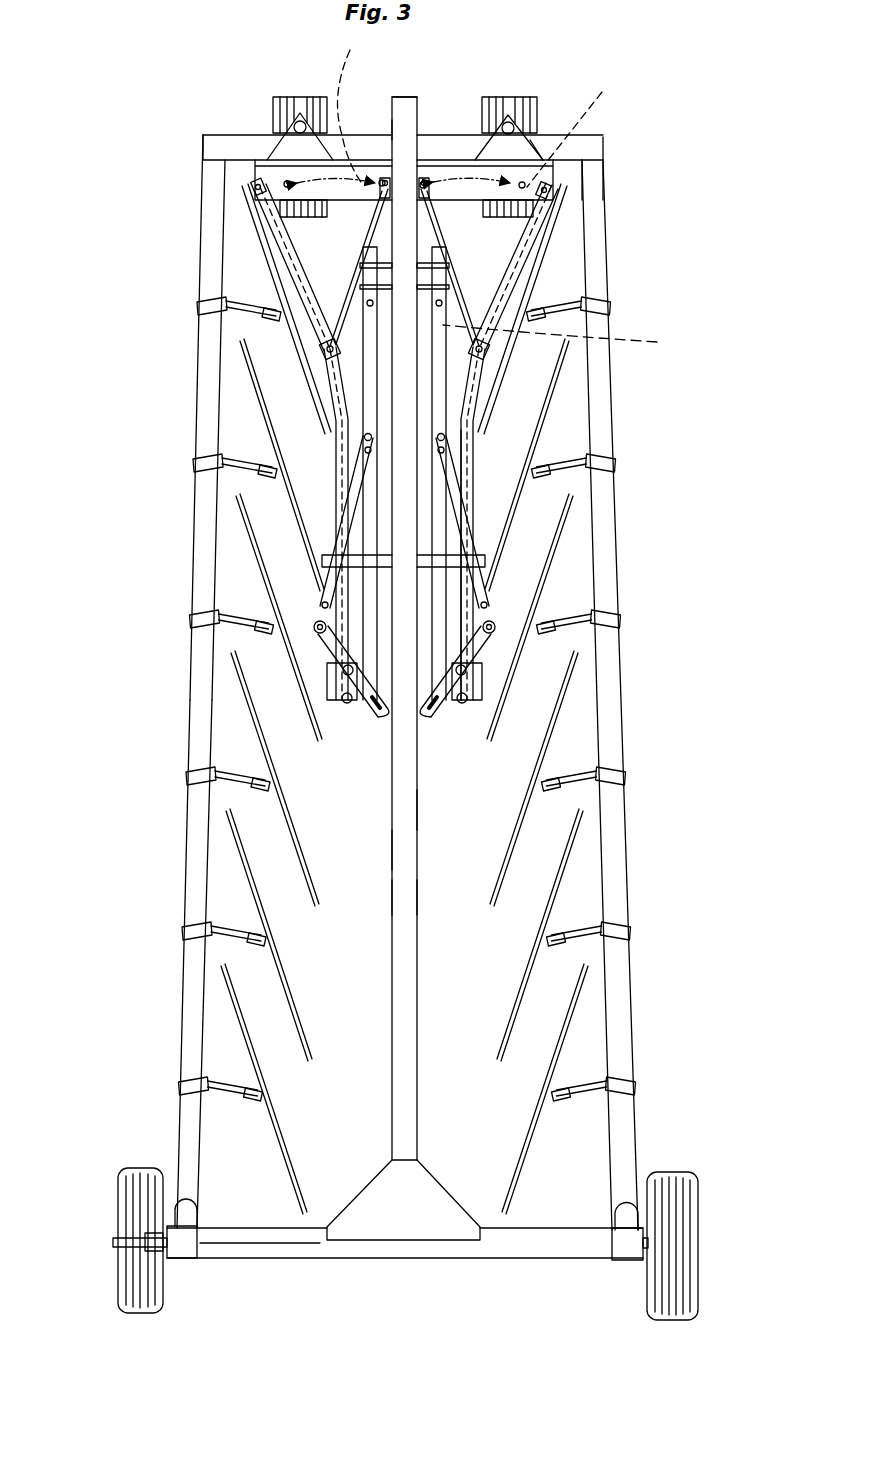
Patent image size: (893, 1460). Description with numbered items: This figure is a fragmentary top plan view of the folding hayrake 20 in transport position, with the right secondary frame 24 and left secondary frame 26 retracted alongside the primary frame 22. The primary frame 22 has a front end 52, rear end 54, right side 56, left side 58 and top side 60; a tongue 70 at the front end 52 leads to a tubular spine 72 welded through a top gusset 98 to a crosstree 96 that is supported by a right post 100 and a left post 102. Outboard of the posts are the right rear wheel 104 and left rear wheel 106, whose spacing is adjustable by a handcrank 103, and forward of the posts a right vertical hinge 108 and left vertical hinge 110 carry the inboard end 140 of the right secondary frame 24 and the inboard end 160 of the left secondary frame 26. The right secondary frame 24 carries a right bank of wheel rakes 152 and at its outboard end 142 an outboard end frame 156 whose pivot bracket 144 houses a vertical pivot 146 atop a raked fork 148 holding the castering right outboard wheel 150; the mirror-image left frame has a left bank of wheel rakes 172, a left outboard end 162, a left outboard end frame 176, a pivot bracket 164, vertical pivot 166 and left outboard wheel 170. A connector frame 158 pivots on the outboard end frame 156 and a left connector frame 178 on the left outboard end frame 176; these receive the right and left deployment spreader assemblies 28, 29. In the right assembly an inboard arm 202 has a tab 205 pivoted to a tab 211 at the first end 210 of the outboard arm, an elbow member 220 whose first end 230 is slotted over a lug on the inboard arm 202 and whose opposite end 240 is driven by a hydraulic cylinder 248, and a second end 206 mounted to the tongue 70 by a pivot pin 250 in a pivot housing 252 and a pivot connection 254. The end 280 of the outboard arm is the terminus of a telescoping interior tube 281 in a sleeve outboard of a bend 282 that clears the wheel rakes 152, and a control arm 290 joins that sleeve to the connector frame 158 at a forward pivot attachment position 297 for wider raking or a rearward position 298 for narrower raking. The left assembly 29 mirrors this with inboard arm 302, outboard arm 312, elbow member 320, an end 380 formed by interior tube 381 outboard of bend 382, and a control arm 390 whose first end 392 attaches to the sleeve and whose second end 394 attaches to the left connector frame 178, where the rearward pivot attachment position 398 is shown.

The folding hayrake 20 is at (615, 58).
The primary frame 22 is at (388, 99).
The right secondary frame 24 is at (632, 913).
The left secondary frame 26 is at (185, 747).
The right deployment spreader assembly 28 is at (485, 735).
The left deployment spreader assembly 29 is at (348, 705).
The front end 52 is at (416, 86).
The rear end 54 is at (445, 1256).
The right side 56 is at (420, 897).
The left side 58 is at (392, 897).
The top side 60 is at (402, 850).
The tongue 70 is at (398, 127).
The tubular spine 72 is at (420, 814).
The crosstree 96 is at (290, 1254).
The top gusset 98 is at (412, 1218).
The right post 100 is at (630, 1255).
The left post 102 is at (190, 1260).
The handcrank 103 is at (130, 1237).
The right rear wheel 104 is at (695, 1243).
The left rear wheel 106 is at (130, 1266).
The right vertical hinge 108 is at (625, 1218).
The left vertical hinge 110 is at (182, 1205).
The inboard end 140 is at (620, 1140).
The outboard end 142 is at (597, 172).
The pivot bracket 144 is at (552, 153).
The vertical pivot 146 is at (518, 152).
The raked fork 148 is at (478, 133).
The right outboard wheel 150 is at (502, 107).
The right bank of wheel rakes 152 is at (523, 977).
The outboard end frame 156 is at (590, 143).
The connector frame 158 is at (557, 177).
The inboard end 160 is at (183, 1122).
The left outboard end 162 is at (205, 262).
The pivot bracket 164 is at (255, 167).
The vertical pivot 166 is at (300, 111).
The left outboard wheel 170 is at (278, 100).
The left bank of wheel rakes 172 is at (302, 1000).
The left outboard end frame 176 is at (228, 136).
The left connector frame 178 is at (337, 191).
The inboard arm 202 is at (463, 420).
The tab 205 is at (470, 705).
The second end 206 is at (472, 365).
The first end 210 is at (505, 677).
The tab 211 is at (470, 700).
The elbow member 220 is at (493, 627).
The first end 230 is at (458, 715).
The opposite end 240 is at (502, 617).
The hydraulic cylinder 248 is at (473, 482).
The pivot pin 250 is at (435, 250).
The pivot housing 252 is at (418, 232).
The pivot connection 254 is at (571, 339).
The end 280 is at (548, 188).
The interior tube 281 is at (533, 247).
The bend 282 is at (482, 432).
The control arm 290 is at (450, 262).
The pivot attachment position 297 is at (425, 182).
The pivot attachment position 298 is at (591, 129).
The inboard arm 302 is at (336, 403).
The outboard arm 312 is at (345, 480).
The elbow member 320 is at (316, 630).
The end 380 is at (260, 190).
The interior tube 381 is at (288, 275).
The bend 382 is at (362, 440).
The control arm 390 is at (348, 280).
The first end 392 is at (328, 349).
The second end 394 is at (370, 226).
The pivot attachment position 398 is at (370, 112).